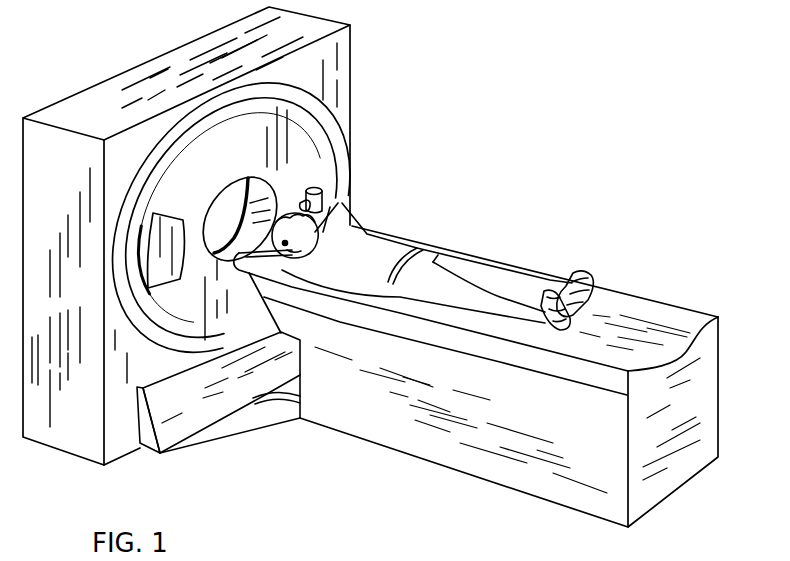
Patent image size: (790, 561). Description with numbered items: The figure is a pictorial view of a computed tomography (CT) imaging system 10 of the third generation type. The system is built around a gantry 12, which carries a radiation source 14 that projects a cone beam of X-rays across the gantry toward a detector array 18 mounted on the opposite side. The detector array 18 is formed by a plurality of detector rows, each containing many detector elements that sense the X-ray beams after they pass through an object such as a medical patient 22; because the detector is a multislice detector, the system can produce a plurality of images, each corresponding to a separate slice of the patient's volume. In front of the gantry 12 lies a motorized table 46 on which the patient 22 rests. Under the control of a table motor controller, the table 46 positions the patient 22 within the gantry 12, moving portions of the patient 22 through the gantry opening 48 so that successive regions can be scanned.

The CT imaging system 10 is at (273, 423).
The gantry 12 is at (177, 118).
The radiation source 14 is at (318, 213).
The detector array 18 is at (167, 290).
The patient 22 is at (365, 230).
The motorized table 46 is at (380, 423).
The gantry opening 48 is at (275, 195).